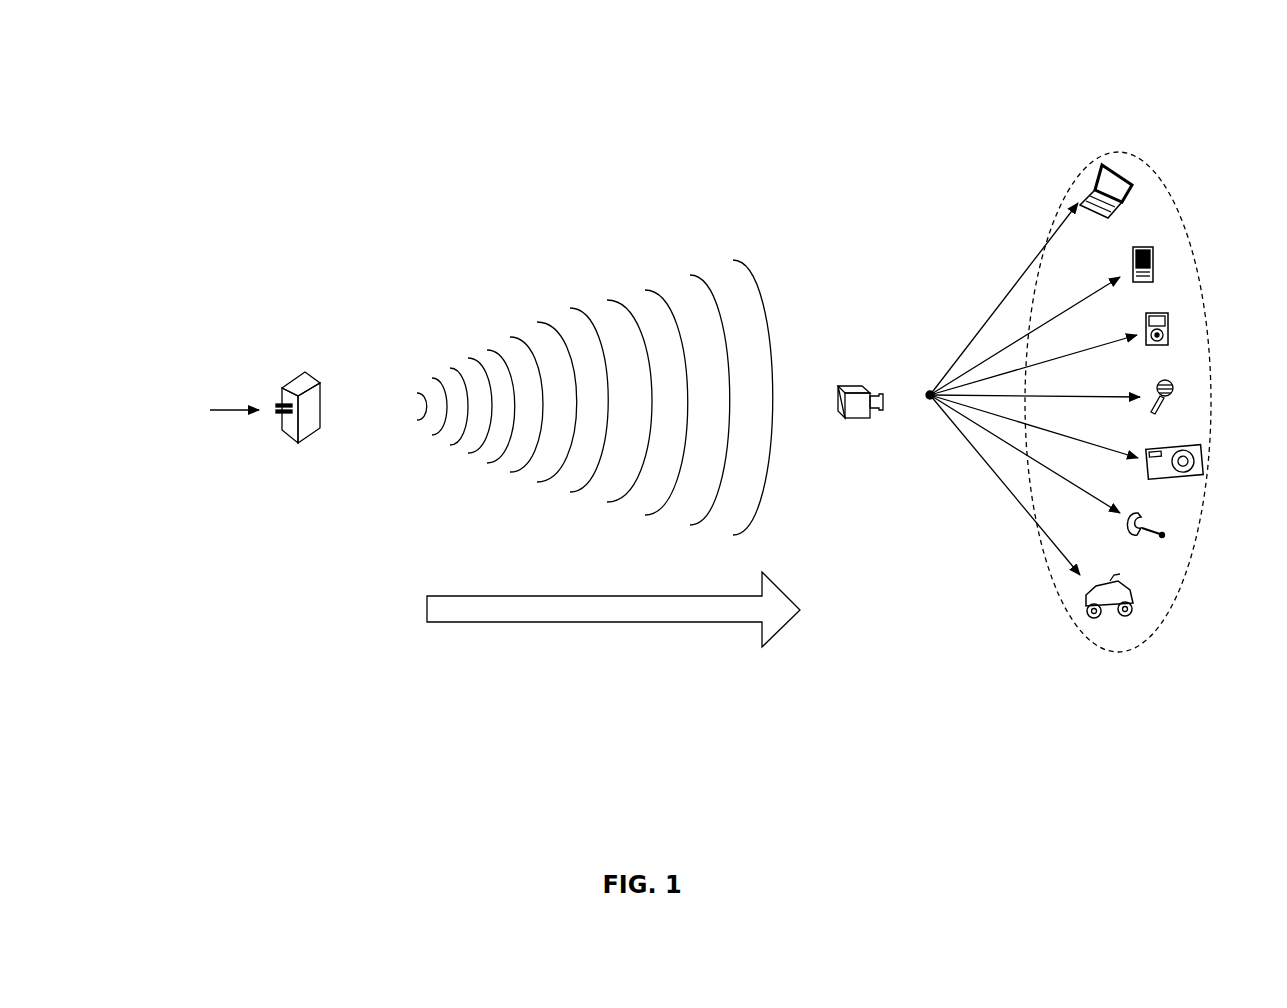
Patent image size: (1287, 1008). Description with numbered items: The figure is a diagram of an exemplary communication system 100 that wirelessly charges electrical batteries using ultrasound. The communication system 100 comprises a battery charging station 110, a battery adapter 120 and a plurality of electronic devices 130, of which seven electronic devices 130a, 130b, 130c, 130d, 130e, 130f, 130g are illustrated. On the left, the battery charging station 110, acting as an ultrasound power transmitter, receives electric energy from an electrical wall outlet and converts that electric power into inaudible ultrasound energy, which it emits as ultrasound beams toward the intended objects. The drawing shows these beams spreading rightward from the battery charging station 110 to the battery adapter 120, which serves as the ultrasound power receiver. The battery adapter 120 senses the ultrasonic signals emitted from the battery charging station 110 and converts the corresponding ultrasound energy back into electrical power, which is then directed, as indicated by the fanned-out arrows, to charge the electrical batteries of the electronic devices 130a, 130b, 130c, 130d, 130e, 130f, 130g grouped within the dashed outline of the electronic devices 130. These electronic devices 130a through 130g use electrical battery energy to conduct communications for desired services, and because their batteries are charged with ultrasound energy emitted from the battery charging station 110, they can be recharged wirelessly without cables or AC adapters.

The communication system 100 is at (858, 79).
The battery charging station 110 is at (306, 372).
The battery adapter 120 is at (862, 383).
The electronic devices 130 is at (1170, 178).
The electronic device 130a is at (1106, 202).
The electronic device 130b is at (1147, 277).
The electronic device 130c is at (1159, 340).
The electronic device 130d is at (1160, 409).
The electronic device 130e is at (1173, 470).
The electronic device 130f is at (1142, 535).
The electronic device 130g is at (1109, 608).